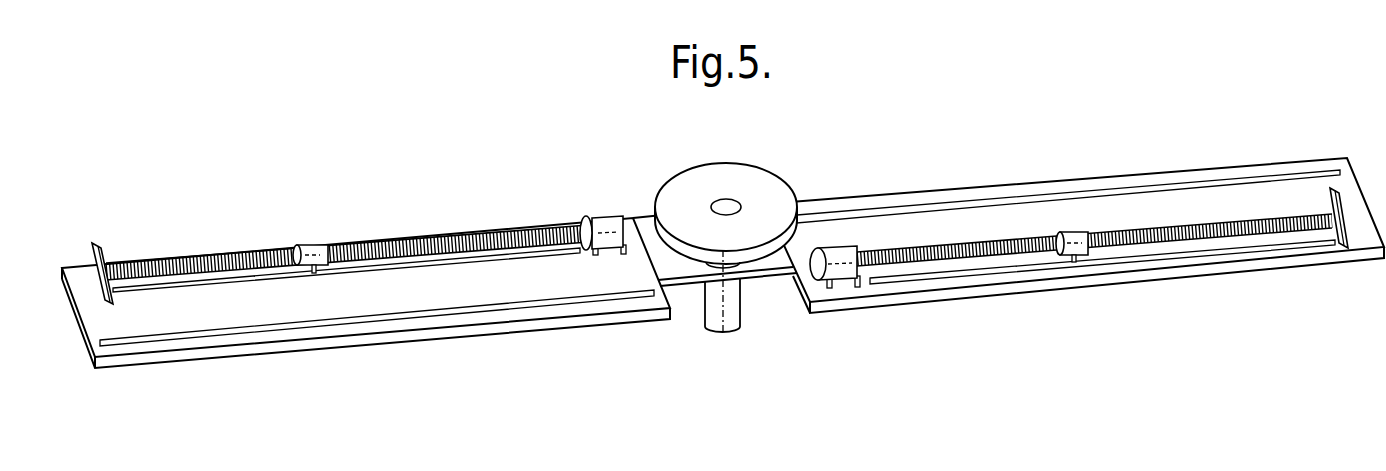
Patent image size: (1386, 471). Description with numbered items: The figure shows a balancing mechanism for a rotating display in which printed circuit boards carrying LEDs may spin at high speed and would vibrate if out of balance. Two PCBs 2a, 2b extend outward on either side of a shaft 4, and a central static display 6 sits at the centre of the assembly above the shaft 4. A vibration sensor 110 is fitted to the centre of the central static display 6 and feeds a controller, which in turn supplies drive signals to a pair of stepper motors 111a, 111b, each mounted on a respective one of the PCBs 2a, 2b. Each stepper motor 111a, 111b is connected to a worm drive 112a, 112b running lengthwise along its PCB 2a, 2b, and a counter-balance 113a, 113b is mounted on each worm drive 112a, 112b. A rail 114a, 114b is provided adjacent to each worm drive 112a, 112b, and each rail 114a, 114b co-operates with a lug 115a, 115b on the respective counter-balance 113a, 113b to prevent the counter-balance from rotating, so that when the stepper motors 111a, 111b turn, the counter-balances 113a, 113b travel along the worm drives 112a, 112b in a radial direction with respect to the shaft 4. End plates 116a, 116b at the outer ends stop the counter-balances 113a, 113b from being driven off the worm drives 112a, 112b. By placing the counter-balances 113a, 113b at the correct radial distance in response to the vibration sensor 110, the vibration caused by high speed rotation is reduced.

The PCB 2a is at (1253, 165).
The PCB 2b is at (492, 327).
The shaft 4 is at (730, 312).
The central static display 6 is at (770, 195).
The vibration sensor 110 is at (724, 200).
The stepper motor 111a is at (843, 270).
The stepper motor 111b is at (610, 227).
The worm drive 112a is at (988, 262).
The worm drive 112b is at (455, 238).
The counter-balance 113a is at (1075, 232).
The counter-balance 113b is at (313, 250).
The rail 114a is at (1230, 253).
The rail 114b is at (202, 285).
The lug 115a is at (1075, 257).
The lug 115b is at (317, 273).
The end plate 116a is at (1350, 245).
The end plate 116b is at (103, 252).